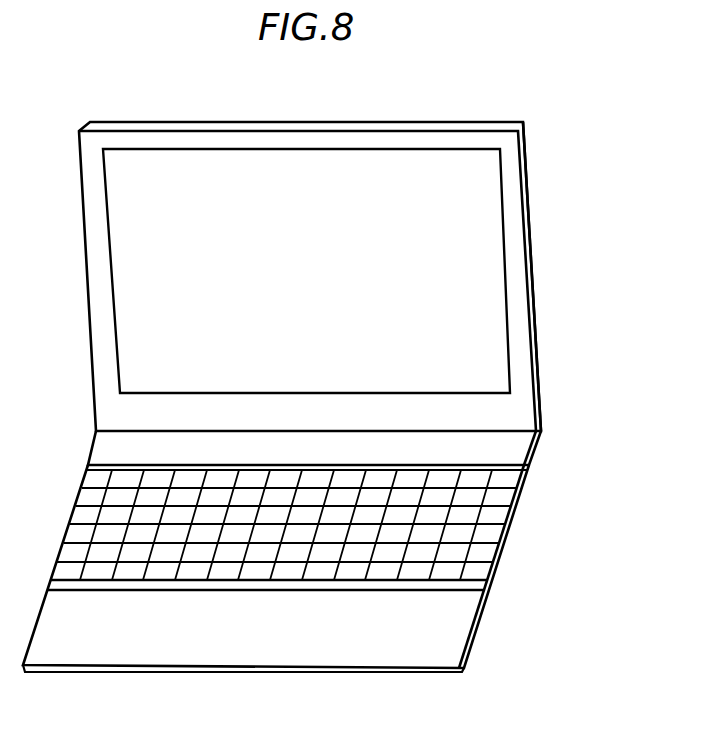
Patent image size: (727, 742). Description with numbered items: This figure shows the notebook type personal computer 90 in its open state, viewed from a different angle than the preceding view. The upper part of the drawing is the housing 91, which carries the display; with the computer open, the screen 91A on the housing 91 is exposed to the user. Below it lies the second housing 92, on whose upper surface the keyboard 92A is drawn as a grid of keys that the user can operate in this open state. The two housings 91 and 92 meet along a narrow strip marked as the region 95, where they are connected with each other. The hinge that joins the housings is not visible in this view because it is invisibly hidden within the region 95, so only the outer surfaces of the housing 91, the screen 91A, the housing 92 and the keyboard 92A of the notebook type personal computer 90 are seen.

The notebook type personal computer 90 is at (316, 367).
The housing 91 is at (344, 247).
The screen 91A is at (507, 243).
The housing 92 is at (312, 568).
The keyboard 92A is at (493, 532).
The region 95 is at (551, 392).